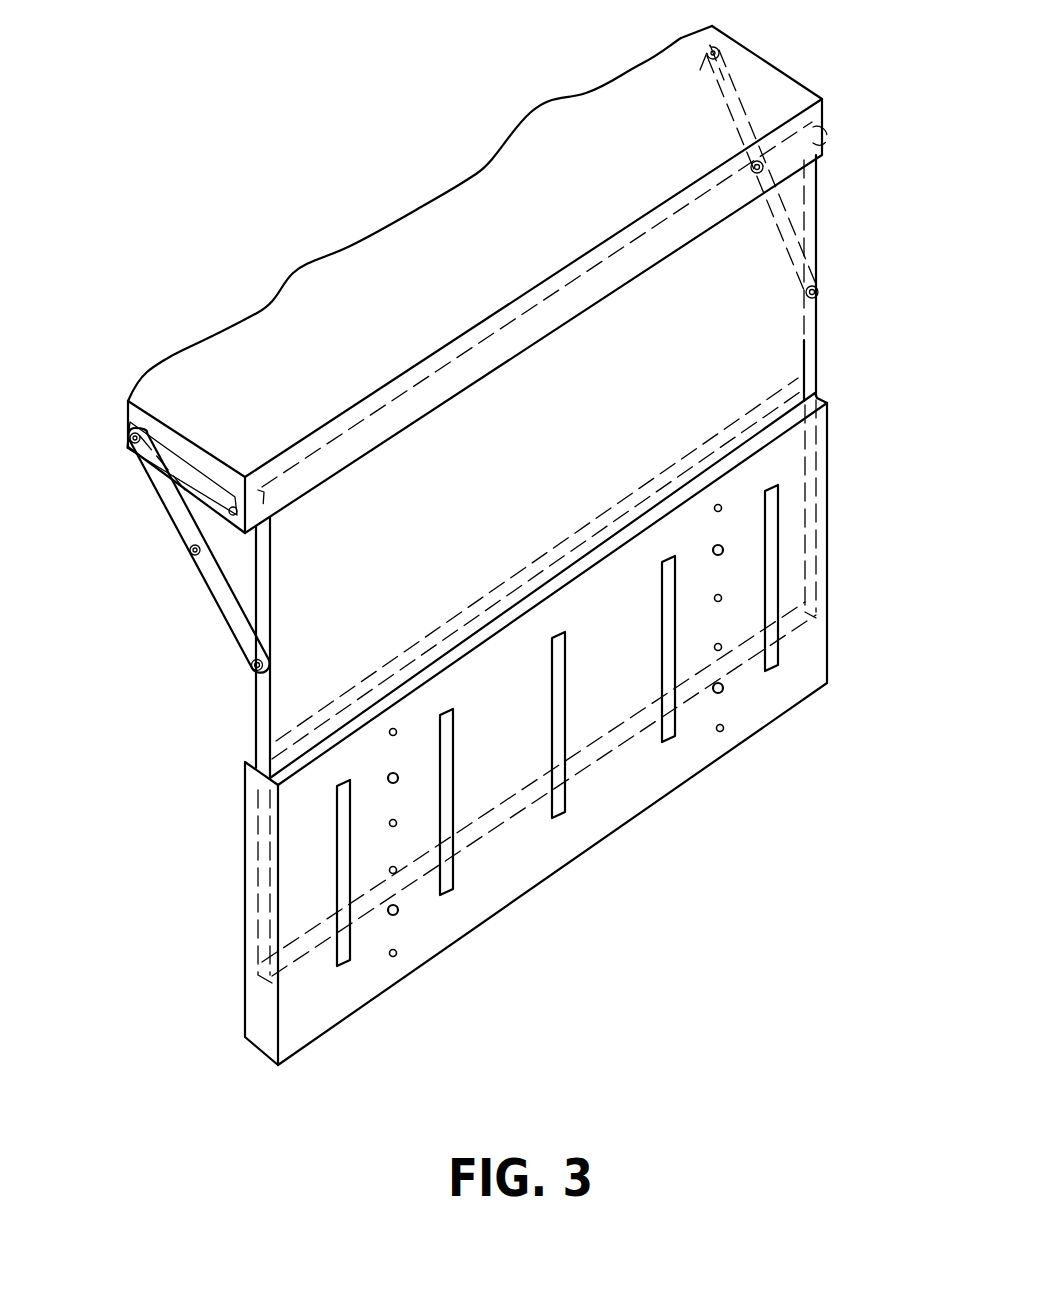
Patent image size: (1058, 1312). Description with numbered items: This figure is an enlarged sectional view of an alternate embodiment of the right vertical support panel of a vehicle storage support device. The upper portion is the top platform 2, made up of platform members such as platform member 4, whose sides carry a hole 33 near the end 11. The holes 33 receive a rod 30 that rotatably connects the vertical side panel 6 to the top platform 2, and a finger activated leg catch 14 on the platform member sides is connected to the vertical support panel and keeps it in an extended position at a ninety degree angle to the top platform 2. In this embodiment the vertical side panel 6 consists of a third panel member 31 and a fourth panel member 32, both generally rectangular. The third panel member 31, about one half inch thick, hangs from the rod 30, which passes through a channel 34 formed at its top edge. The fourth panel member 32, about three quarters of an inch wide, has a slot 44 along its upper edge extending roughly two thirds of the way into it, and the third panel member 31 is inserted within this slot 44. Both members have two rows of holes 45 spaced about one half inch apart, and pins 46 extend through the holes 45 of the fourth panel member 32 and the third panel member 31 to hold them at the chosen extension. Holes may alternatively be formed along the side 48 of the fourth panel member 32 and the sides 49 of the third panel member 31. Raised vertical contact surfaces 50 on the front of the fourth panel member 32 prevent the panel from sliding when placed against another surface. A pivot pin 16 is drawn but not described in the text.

The top platform 2 is at (128, 405).
The platform member 4 is at (770, 55).
The vertical side panel 6 is at (817, 230).
The end of platform member 11 is at (817, 117).
The finger activated leg catch 14 is at (257, 636).
The pivot pin 16 is at (255, 668).
The rod 30 is at (210, 458).
The third panel member 31 is at (817, 303).
The fourth panel member 32 is at (830, 597).
The hole 33 is at (833, 143).
The channel 34 is at (556, 278).
The slot 44 is at (786, 418).
The holes 45 is at (720, 732).
The pin 46 is at (722, 688).
The side of fourth panel member 48 is at (260, 1020).
The side of third panel member 49 is at (266, 700).
The raised vertical contact surface 50 is at (780, 655).